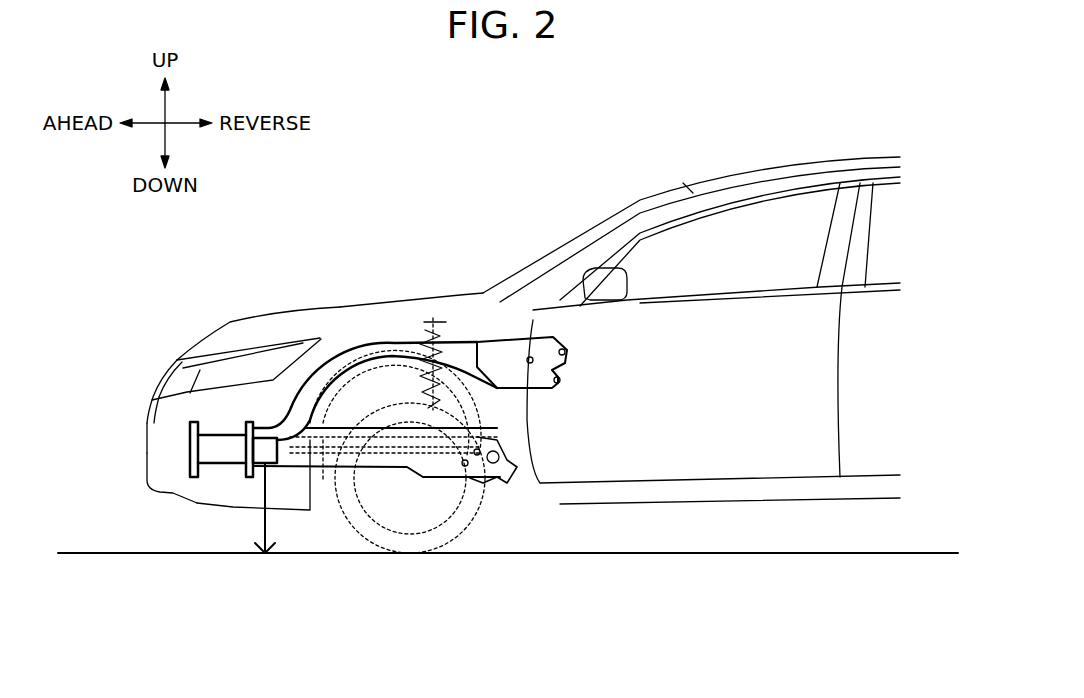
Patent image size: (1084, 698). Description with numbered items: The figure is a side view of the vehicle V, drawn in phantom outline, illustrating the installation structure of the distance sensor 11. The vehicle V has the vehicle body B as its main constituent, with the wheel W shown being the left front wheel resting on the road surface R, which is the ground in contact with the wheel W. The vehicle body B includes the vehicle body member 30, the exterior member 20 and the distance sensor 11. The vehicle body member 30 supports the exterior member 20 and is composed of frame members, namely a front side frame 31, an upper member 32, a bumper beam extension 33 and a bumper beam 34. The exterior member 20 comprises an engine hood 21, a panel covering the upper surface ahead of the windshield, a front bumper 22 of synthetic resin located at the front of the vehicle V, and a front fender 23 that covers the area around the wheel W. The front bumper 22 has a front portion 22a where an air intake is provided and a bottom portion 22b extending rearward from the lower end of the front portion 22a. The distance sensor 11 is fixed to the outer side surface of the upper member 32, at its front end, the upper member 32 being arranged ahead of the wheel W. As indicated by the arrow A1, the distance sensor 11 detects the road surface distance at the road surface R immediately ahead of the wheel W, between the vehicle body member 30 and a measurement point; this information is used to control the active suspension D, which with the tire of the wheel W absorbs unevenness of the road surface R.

The distance sensor 11 is at (253, 455).
The exterior member 20 is at (139, 394).
The engine hood 21 is at (322, 307).
The front bumper 22 is at (147, 427).
The front portion 22a is at (147, 457).
The bottom portion 22b is at (247, 513).
The front fender 23 is at (375, 323).
The vehicle body member 30 is at (406, 328).
The front side frame 31 is at (390, 468).
The upper member 32 is at (320, 367).
The bumper beam extension 33 is at (213, 468).
The bumper beam 34 is at (188, 466).
The arrow A1 is at (268, 523).
The vehicle body B is at (777, 162).
The active suspension D is at (445, 333).
The road surface R is at (920, 553).
The vehicle V is at (446, 210).
The wheel W is at (457, 527).